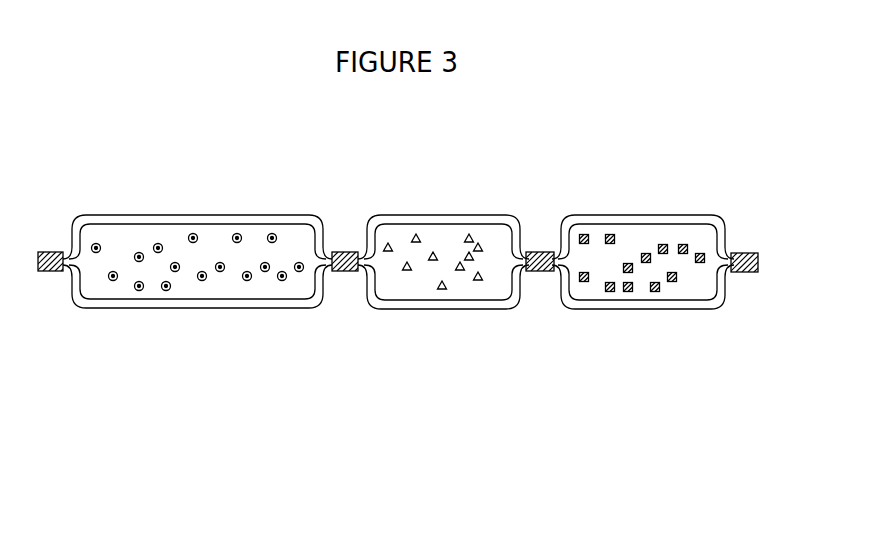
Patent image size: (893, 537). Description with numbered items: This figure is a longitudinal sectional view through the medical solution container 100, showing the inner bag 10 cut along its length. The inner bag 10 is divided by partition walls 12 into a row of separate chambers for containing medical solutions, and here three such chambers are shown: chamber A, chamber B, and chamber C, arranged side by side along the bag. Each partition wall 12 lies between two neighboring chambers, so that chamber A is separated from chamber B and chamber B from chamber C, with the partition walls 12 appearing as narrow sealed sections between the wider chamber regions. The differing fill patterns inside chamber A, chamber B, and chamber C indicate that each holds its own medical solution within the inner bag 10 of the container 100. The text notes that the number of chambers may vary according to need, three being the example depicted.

The medical solution container 100 is at (438, 491).
The inner bag 10 is at (635, 309).
The partition wall 12 is at (527, 272).
The chamber A is at (152, 215).
The chamber B is at (402, 215).
The chamber C is at (623, 215).